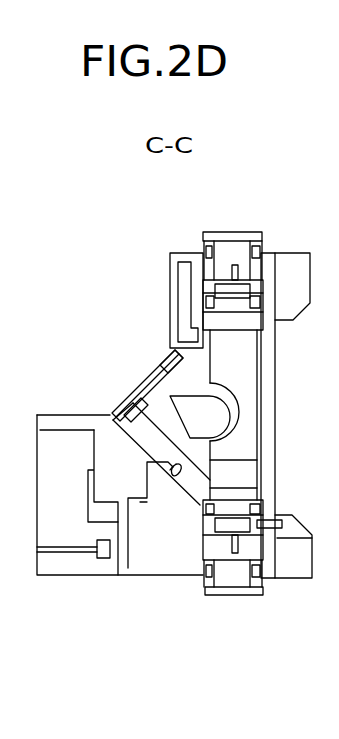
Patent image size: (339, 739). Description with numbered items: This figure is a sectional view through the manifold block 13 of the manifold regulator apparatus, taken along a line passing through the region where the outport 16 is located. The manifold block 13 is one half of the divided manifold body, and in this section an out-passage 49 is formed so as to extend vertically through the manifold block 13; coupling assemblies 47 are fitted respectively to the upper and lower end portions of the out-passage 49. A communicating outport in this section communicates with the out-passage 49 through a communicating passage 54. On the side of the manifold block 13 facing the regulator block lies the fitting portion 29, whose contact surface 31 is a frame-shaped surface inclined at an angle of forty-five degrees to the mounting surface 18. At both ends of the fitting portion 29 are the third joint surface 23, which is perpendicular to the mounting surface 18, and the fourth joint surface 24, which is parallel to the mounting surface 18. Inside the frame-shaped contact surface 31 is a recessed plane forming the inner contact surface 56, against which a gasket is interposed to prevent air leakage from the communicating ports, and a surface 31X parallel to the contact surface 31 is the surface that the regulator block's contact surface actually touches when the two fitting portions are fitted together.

The manifold block 13 is at (71, 583).
The outport 16 is at (269, 261).
The mounting surface 18 is at (275, 357).
The third joint surface 23 is at (57, 414).
The fourth joint surface 24 is at (169, 259).
The fitting portion 29 is at (106, 405).
The contact surface 31 is at (163, 350).
The surface parallel to the contact surface 31X is at (152, 362).
The coupling assembly 47 is at (269, 229).
The out-passage 49 is at (258, 410).
The communicating passage 54 is at (182, 474).
The inner contact surface 56 is at (149, 393).